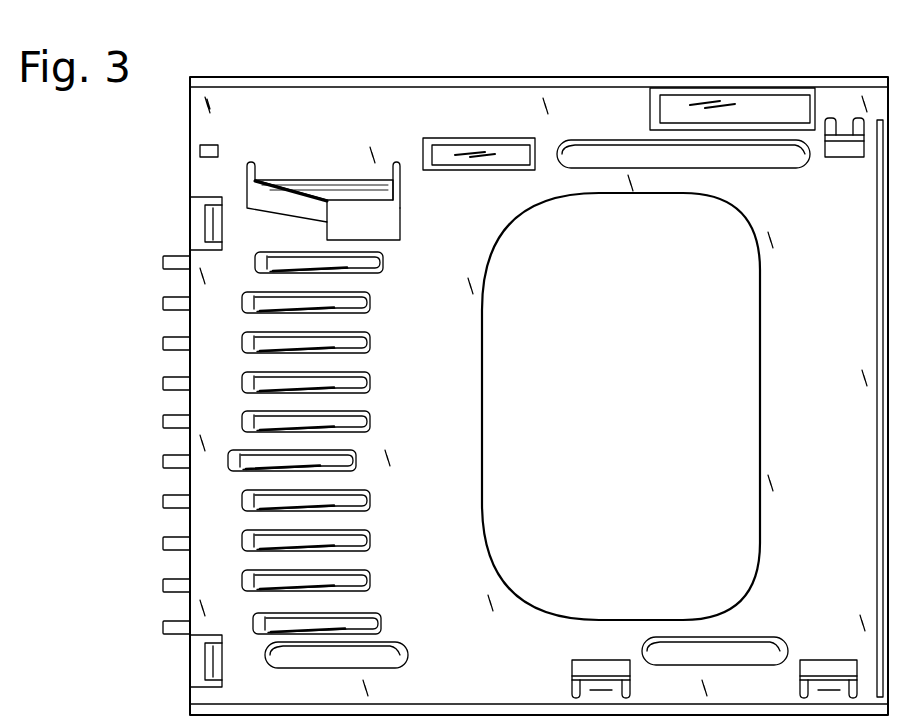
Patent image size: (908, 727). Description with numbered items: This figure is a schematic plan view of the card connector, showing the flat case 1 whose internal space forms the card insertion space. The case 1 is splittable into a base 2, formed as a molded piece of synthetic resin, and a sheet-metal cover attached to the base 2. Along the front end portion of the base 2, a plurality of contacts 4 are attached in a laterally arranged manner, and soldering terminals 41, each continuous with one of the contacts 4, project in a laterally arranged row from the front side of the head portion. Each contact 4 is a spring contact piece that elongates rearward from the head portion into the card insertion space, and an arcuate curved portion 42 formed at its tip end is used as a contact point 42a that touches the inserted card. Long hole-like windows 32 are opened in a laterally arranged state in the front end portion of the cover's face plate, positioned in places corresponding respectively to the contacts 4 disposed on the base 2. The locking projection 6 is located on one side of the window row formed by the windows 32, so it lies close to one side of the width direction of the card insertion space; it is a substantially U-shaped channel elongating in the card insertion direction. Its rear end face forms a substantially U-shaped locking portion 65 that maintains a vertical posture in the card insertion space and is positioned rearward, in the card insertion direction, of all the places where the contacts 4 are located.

The case 1 is at (188, 714).
The base 2 is at (188, 124).
The contacts 4 is at (290, 300).
The locking projection 6 is at (362, 215).
The windows 32 is at (348, 426).
The soldering terminals 41 is at (163, 300).
The arcuate curved portion 42 is at (355, 383).
The contact point 42a is at (420, 312).
The locking portion 65 is at (380, 207).